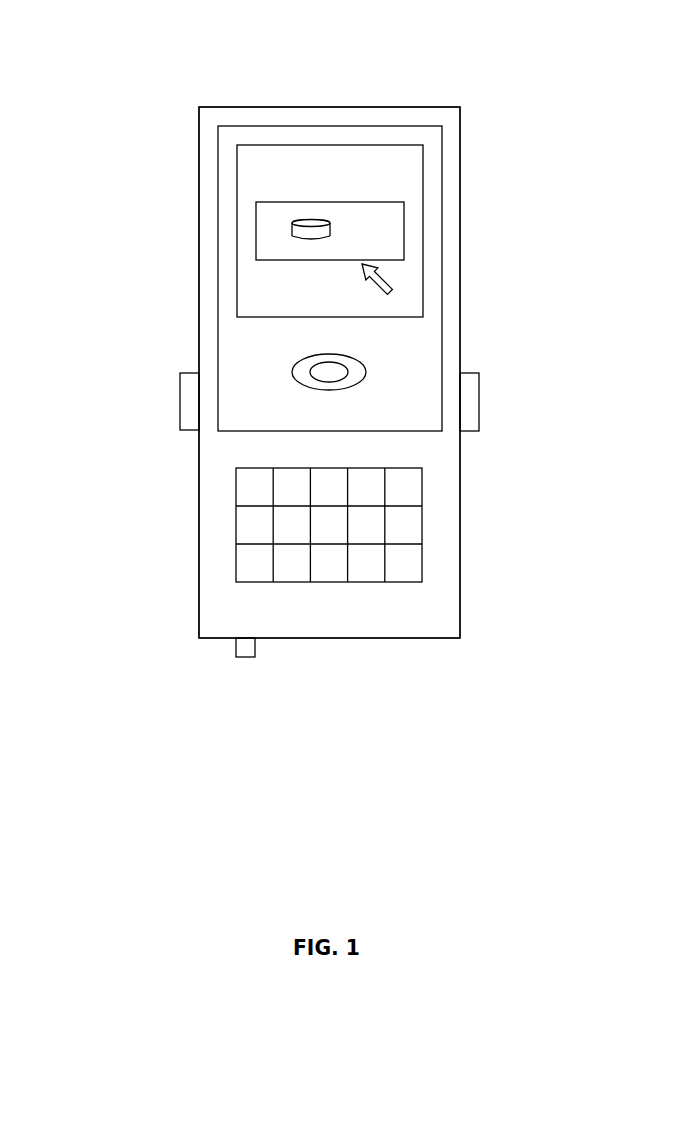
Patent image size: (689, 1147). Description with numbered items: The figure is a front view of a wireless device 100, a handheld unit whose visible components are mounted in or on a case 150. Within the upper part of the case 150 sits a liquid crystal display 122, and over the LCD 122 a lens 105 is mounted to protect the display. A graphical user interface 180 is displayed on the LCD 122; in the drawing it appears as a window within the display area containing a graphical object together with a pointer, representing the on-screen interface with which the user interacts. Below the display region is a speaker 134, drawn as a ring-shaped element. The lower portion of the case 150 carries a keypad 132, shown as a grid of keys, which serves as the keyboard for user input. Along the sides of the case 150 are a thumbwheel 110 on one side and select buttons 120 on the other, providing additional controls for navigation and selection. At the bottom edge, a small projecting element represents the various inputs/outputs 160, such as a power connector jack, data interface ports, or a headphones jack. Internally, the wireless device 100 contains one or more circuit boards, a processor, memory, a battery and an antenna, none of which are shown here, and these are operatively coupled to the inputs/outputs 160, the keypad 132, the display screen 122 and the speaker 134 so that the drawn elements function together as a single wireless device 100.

The wireless device 100 is at (293, 88).
The case 150 is at (457, 133).
The lens 105 is at (237, 335).
The liquid crystal display 122 is at (274, 183).
The graphical user interface 180 is at (386, 219).
The speaker 134 is at (367, 356).
The select buttons 120 is at (180, 412).
The thumbwheel 110 is at (479, 413).
The keypad 132 is at (255, 524).
The inputs/outputs 160 is at (237, 676).